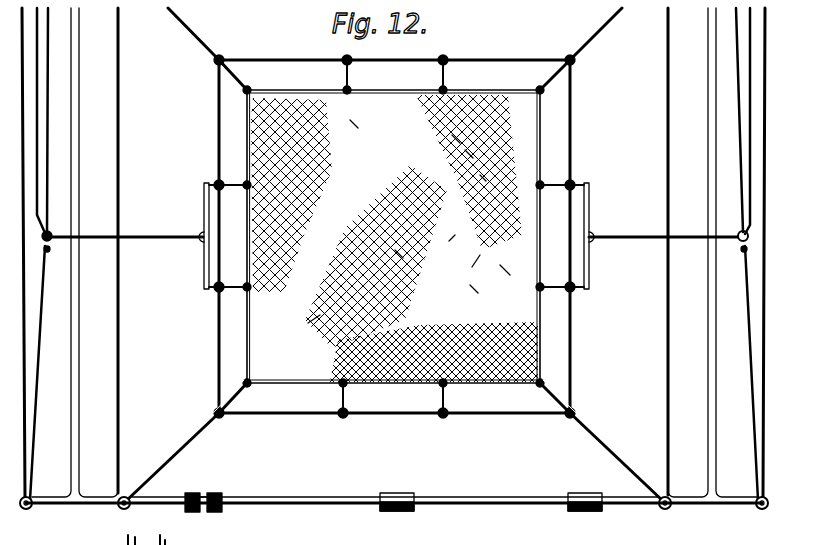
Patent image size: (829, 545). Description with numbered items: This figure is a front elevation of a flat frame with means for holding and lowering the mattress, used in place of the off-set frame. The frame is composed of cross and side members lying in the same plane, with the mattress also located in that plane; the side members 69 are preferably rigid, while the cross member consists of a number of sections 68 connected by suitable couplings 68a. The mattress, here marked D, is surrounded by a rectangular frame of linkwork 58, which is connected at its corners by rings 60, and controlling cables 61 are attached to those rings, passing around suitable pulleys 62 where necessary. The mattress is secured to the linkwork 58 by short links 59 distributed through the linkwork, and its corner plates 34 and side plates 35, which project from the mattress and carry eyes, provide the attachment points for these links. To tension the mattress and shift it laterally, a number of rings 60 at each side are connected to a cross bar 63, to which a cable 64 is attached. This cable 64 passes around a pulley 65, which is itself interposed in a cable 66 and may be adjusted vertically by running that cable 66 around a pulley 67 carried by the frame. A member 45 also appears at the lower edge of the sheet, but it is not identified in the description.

The corner eye plate 34 is at (545, 93).
The side eye plate 35 is at (243, 183).
The support member 45 is at (169, 540).
The rectangular frame of linkwork 58 is at (217, 101).
The short link 59 is at (340, 63).
The ring 60 is at (222, 57).
The controlling cable 61 is at (606, 436).
The pulley 62 is at (128, 496).
The cross bar 63 is at (205, 200).
The cable 64 is at (172, 241).
The pulley 65 is at (52, 233).
The cable 66 is at (49, 50).
The pulley 67 is at (31, 510).
The cross member section 68 is at (283, 497).
The coupling 68a is at (193, 508).
The side member 69 is at (79, 80).
The fabric panel D is at (394, 238).